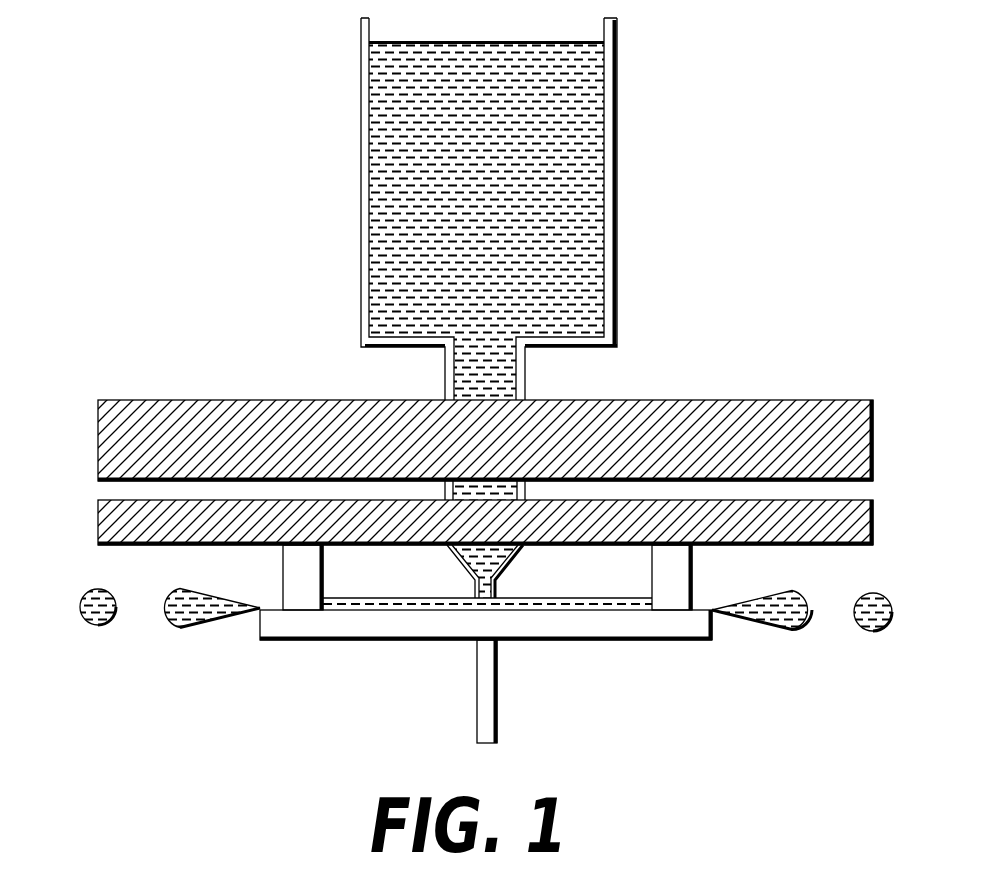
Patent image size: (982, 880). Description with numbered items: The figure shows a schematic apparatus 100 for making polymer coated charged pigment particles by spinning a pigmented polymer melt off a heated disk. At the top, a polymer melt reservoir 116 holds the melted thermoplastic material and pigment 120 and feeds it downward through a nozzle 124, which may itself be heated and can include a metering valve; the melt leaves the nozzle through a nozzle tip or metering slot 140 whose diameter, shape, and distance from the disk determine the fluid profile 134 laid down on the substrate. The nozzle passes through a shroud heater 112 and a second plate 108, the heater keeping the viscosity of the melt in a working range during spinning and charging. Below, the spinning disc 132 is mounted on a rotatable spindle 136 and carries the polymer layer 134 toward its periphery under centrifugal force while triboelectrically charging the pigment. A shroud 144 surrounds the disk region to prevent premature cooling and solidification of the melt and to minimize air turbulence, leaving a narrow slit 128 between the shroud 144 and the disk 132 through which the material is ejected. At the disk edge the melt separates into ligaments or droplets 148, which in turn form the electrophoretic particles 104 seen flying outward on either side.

The fluid dispensing system 100 is at (252, 90).
The polymer melt reservoir 116 is at (363, 58).
The melted thermoplastic material and pigment 120 is at (570, 178).
The nozzle 124 is at (528, 390).
The shroud heater 112 is at (98, 430).
The lower plate 108 is at (98, 520).
The electrophoretic particles 104 is at (62, 600).
The narrow slit 128 is at (273, 603).
The spinning disc 132 is at (260, 625).
The fluid profile 134 is at (400, 603).
The rotatable spindle 136 is at (497, 687).
The nozzle tip 140 is at (500, 572).
The shroud 144 is at (692, 585).
The ligaments 148 is at (777, 623).